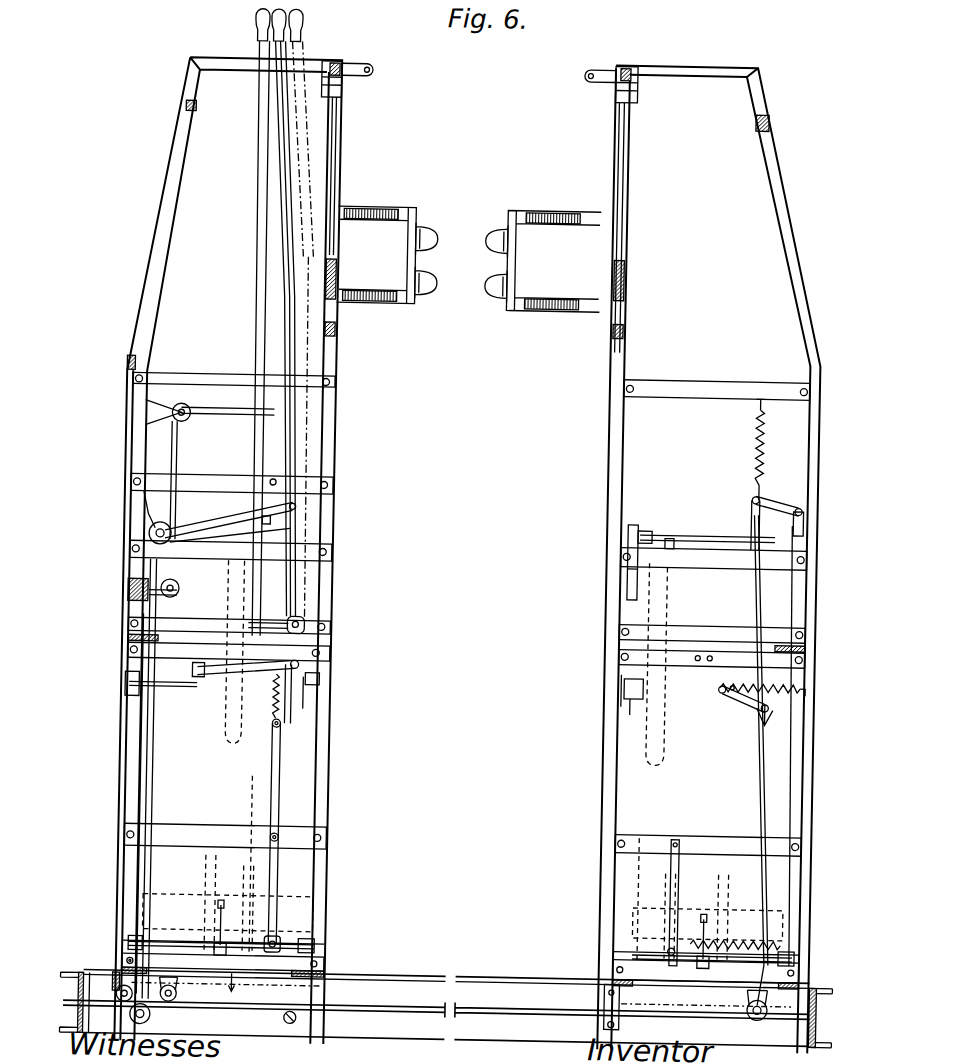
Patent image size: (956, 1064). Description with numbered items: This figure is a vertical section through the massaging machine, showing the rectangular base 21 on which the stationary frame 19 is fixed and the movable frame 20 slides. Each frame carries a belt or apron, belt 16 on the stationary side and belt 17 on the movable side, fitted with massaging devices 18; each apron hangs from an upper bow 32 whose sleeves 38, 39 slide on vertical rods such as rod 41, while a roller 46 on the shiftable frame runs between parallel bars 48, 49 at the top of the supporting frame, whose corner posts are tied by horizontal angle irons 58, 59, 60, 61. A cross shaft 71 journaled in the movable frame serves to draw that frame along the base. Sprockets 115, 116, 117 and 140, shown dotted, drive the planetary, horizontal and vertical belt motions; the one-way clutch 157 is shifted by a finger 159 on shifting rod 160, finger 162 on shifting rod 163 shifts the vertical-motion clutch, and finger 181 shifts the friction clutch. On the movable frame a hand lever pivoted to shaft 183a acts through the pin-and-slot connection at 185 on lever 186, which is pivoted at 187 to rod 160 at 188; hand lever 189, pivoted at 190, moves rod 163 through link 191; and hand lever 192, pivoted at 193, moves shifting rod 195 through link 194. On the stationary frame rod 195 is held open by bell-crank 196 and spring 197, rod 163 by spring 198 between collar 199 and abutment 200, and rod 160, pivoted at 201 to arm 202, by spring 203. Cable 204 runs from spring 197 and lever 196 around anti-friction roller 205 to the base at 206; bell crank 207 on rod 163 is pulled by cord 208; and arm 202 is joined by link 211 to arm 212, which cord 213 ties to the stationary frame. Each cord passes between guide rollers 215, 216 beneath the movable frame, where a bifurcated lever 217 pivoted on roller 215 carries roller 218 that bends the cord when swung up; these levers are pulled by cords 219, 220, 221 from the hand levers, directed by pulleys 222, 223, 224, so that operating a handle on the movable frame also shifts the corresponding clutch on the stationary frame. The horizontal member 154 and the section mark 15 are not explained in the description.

The rail 15 is at (154, 1003).
The belt or apron 16 is at (500, 214).
The belt or apron 17 is at (413, 226).
The massaging devices 18 is at (430, 297).
The stationary frame 19 is at (711, 560).
The movable frame 20 is at (228, 550).
The rectangular base 21 is at (528, 968).
The upper bow 32 is at (368, 209).
The sleeve 38 is at (334, 255).
The sleeve 39 is at (334, 329).
The vertical rod 41 is at (330, 156).
The roller 46 is at (340, 80).
The parallel bar 48 is at (331, 70).
The parallel bar 49 is at (326, 66).
The horizontal angle iron 58 is at (128, 657).
The horizontal angle iron 59 is at (334, 657).
The horizontal angle iron 60 is at (124, 372).
The horizontal angle iron 61 is at (129, 594).
The cross shaft 71 is at (293, 1023).
The sprocket 115 is at (450, 870).
The sprocket 116 is at (262, 522).
The sprocket 117 is at (240, 752).
The sprocket 140 is at (469, 882).
The cross bar 154 is at (238, 381).
The one-way clutch 157 is at (250, 898).
The finger 159 is at (229, 962).
The shifting rod 160 is at (300, 951).
The finger 162 is at (322, 688).
The shifting rod 163 is at (148, 692).
The finger 181 is at (636, 522).
The shaft 183a is at (262, 631).
The pin-and-slot connection 185 is at (285, 727).
The lever 186 is at (285, 771).
The pivot 187 is at (285, 840).
The connection point 188 is at (286, 944).
The hand lever 189 is at (284, 148).
The pivot 190 is at (306, 624).
The link 191 is at (226, 686).
The hand lever 192 is at (250, 146).
The pivot 193 is at (269, 484).
The link 194 is at (210, 526).
The shifting rod 195 is at (240, 548).
The bell-crank 196 is at (771, 500).
The spring 197 is at (754, 441).
The spring 198 is at (803, 688).
The collar 199 is at (735, 679).
The abutment 200 is at (804, 683).
The pivot 201 is at (675, 946).
The arm 202 is at (677, 880).
The spring 203 is at (718, 934).
The wire or cable 204 is at (765, 588).
The anti-friction roller 205 is at (772, 1013).
The attachment point 206 is at (121, 988).
The bell crank 207 is at (760, 712).
The cord or wire 208 is at (797, 784).
The link 211 is at (624, 1024).
The arm 212 is at (612, 1002).
The cord 213 is at (535, 1015).
The guide roller 215 is at (111, 1012).
The guide roller 216 is at (174, 1003).
The bifurcated lever 217 is at (141, 960).
The roller 218 is at (149, 1021).
The cord 219 is at (170, 462).
The cord 220 is at (150, 750).
The cord 221 is at (180, 596).
The pulley 222 is at (180, 409).
The pulley 223 is at (165, 530).
The pulley 224 is at (150, 600).